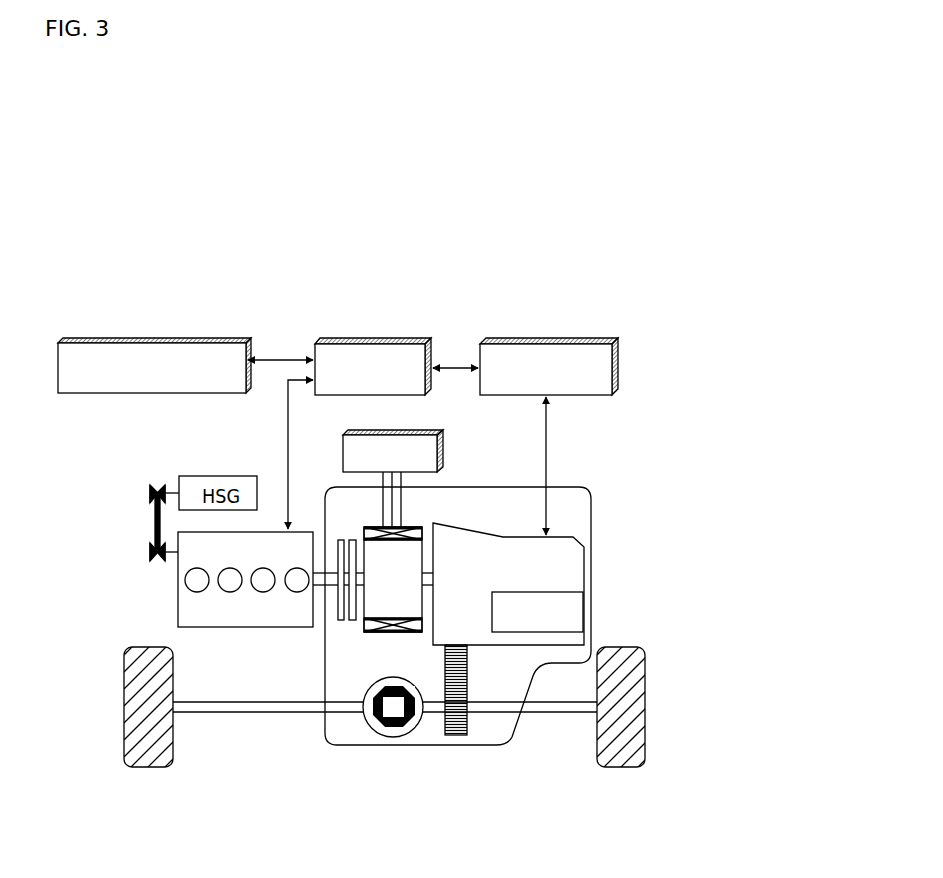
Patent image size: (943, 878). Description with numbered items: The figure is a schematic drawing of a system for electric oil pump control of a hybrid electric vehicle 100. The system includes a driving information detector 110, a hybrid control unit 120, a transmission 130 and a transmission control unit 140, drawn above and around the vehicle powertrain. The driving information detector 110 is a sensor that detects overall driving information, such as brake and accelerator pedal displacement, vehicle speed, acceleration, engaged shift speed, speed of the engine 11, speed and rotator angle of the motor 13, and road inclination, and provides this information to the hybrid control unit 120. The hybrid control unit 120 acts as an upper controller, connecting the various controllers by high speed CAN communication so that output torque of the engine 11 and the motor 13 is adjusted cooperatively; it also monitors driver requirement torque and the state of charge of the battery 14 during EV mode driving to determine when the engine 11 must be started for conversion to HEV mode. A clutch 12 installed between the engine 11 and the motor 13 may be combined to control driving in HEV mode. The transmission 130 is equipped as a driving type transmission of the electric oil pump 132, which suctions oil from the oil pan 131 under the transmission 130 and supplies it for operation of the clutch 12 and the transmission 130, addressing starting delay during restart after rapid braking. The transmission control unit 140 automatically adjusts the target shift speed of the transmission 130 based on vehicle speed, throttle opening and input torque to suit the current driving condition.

The system for electric oil pump control of hybrid electric vehicle 100 is at (521, 232).
The driving information detector 110 is at (201, 337).
The hybrid control unit 120 is at (373, 338).
The transmission control unit 140 is at (530, 338).
The battery 14 is at (445, 445).
The engine 11 is at (216, 628).
The clutch 12 is at (348, 538).
The motor 13 is at (402, 533).
The transmission 130 is at (588, 572).
The oil pan 131 is at (535, 645).
The electric oil pump 132 is at (585, 608).